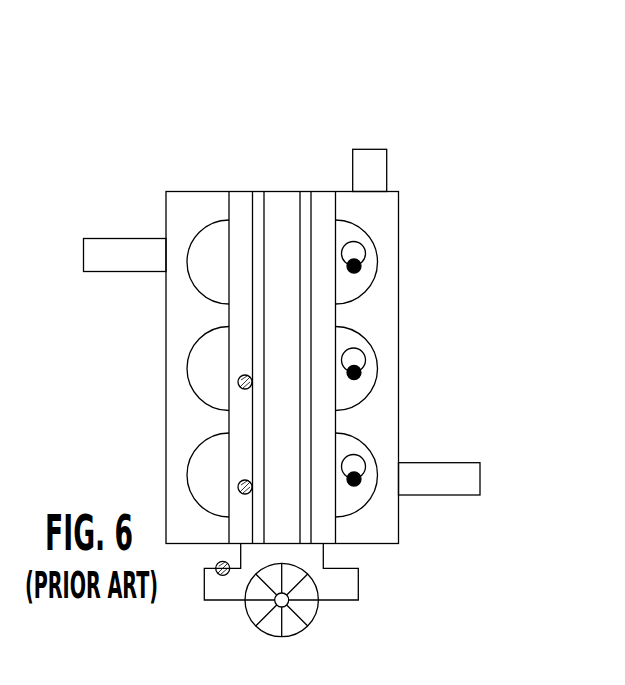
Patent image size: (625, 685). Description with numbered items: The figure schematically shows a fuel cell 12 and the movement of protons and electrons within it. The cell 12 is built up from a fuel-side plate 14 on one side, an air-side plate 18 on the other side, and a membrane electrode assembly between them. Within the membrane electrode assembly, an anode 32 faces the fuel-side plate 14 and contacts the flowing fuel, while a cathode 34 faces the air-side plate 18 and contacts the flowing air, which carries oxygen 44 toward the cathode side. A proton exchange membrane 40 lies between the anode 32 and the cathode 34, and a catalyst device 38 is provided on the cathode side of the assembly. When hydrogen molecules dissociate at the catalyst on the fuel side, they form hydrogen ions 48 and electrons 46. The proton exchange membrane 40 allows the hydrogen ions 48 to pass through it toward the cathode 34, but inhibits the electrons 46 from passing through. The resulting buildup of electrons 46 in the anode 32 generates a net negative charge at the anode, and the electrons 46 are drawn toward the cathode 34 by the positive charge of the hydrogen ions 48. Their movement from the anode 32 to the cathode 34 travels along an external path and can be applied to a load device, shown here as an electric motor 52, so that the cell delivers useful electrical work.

The cell 12 is at (130, 113).
The fuel-side plate 14 is at (207, 190).
The air-side plate 18 is at (419, 203).
The anode 32 is at (242, 188).
The proton exchange membrane 40 is at (281, 188).
The catalyst device 38 is at (307, 188).
The cathode 34 is at (324, 188).
The oxygen 44 is at (377, 262).
The hydrogen ions 48 is at (360, 279).
The electrons 46 is at (222, 380).
The electric motor 52 is at (318, 613).